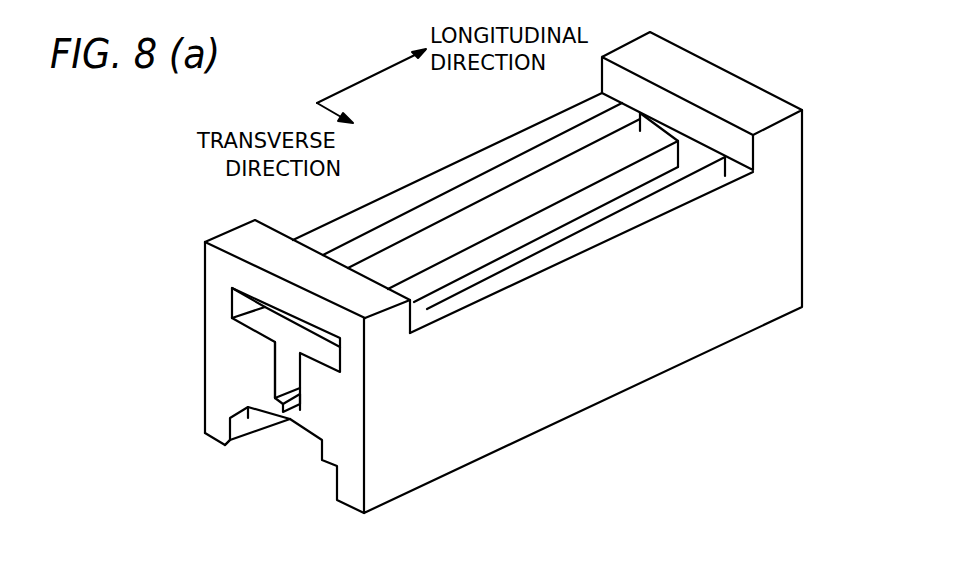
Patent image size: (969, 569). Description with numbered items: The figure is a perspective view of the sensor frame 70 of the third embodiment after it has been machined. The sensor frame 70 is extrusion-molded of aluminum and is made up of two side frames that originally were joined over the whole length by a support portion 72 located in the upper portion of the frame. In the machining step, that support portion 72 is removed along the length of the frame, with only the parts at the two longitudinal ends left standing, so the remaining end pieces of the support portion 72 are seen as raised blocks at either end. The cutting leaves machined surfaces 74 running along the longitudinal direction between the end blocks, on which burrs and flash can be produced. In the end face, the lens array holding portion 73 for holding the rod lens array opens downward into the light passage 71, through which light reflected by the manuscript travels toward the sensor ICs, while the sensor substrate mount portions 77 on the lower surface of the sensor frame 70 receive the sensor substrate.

The sensor frame 70 is at (787, 222).
The light passage 71 is at (287, 418).
The support portion 72 is at (260, 247).
The lens array holding portion 73 is at (288, 362).
The machined surfaces 74 is at (535, 142).
The sensor substrate mount portions 77 is at (235, 427).